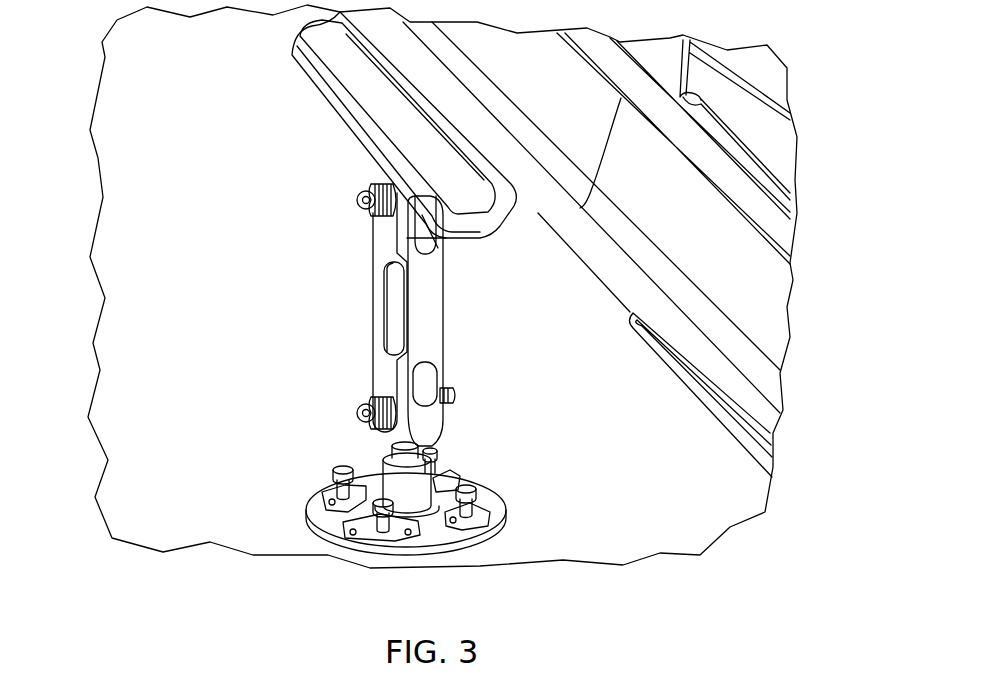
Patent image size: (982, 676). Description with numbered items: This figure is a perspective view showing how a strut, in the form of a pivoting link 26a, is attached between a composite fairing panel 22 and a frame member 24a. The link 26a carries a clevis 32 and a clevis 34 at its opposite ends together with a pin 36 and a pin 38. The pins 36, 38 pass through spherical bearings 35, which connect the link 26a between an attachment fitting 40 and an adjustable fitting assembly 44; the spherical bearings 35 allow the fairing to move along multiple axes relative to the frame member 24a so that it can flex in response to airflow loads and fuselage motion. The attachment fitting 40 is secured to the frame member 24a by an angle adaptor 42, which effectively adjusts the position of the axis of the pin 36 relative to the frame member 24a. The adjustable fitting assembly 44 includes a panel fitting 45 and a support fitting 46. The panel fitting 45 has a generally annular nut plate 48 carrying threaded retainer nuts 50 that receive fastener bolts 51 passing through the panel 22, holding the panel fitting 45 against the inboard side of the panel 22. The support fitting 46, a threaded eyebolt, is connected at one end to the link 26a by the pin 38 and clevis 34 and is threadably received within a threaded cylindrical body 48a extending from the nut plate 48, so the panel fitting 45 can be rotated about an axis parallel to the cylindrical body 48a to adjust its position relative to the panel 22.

The panel 22 is at (150, 307).
The frame member 24a is at (690, 183).
The link 26a is at (383, 313).
The clevis 32 is at (357, 200).
The clevis 34 is at (457, 366).
The spherical bearings 35 is at (418, 214).
The pin 36 is at (377, 213).
The pin 38 is at (367, 410).
The attachment fitting 40 is at (357, 120).
The angle adaptor 42 is at (327, 33).
The adjustable fitting assembly 44 is at (507, 531).
The panel fitting 45 is at (470, 471).
The support fitting 46 is at (393, 447).
The nut plate 48 is at (333, 522).
The cylindrical body 48a is at (403, 478).
The threaded retainer nuts 50 is at (473, 537).
The fastener bolts 51 is at (330, 470).